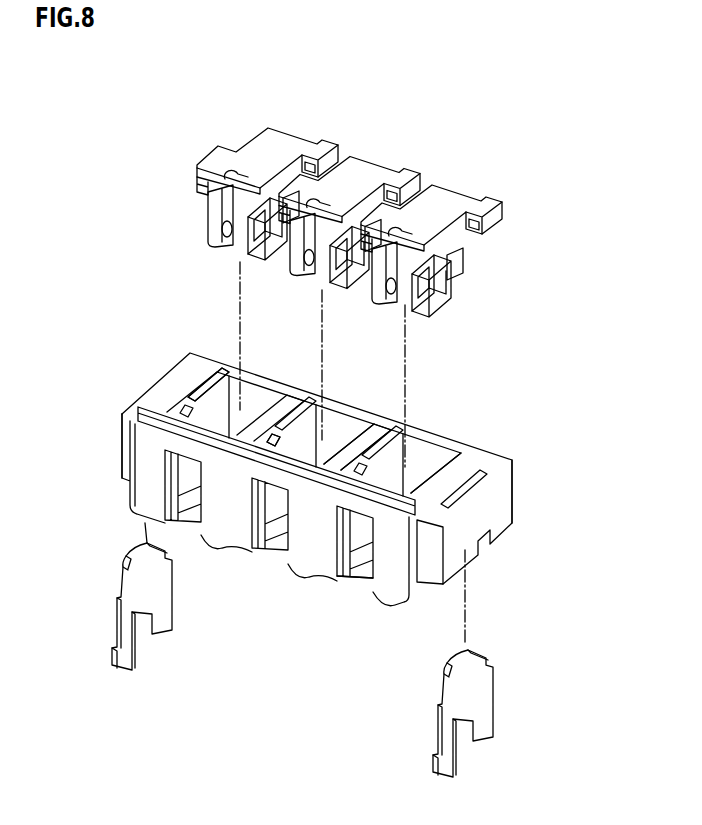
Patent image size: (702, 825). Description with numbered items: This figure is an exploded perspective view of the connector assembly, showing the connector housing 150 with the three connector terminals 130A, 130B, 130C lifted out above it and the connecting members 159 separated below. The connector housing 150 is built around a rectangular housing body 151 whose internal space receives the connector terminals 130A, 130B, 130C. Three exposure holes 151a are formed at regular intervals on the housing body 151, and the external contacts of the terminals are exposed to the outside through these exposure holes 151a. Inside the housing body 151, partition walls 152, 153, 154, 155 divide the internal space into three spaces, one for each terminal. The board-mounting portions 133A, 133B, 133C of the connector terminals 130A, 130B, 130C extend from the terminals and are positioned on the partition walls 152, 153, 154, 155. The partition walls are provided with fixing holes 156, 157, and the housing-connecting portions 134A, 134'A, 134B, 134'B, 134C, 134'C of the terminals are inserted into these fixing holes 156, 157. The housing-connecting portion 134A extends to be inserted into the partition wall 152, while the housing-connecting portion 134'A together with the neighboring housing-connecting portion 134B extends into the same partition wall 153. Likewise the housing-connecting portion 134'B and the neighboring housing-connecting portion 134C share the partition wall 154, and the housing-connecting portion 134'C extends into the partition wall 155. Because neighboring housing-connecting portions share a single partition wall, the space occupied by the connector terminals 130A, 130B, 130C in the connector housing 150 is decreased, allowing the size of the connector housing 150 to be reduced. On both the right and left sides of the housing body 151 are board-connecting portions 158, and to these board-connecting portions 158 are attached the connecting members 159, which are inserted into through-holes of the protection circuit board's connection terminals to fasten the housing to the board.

The connector terminal 130A is at (445, 235).
The connector terminal 130B is at (320, 204).
The connector terminal 130C is at (238, 164).
The board-mounting portion 133A is at (467, 243).
The board-mounting portion 133B is at (333, 181).
The board-mounting portion 133C is at (251, 148).
The housing-connecting portion 134A is at (505, 216).
The housing-connecting portion 134B is at (415, 188).
The housing-connecting portion 134C is at (337, 155).
The housing-connecting portion 134'A is at (362, 289).
The housing-connecting portion 134'B is at (229, 249).
The housing-connecting portion 134'C is at (150, 180).
The connector housing 150 is at (318, 494).
The housing body 151 is at (278, 484).
The exposure hole 151a is at (363, 582).
The partition wall 152 is at (432, 470).
The partition wall 153 is at (355, 457).
The partition wall 154 is at (275, 430).
The partition wall 155 is at (192, 400).
The fixing hole 156 is at (400, 435).
The fixing hole 157 is at (345, 447).
The board-connecting portion 158 is at (128, 433).
The connecting member 159 is at (120, 622).